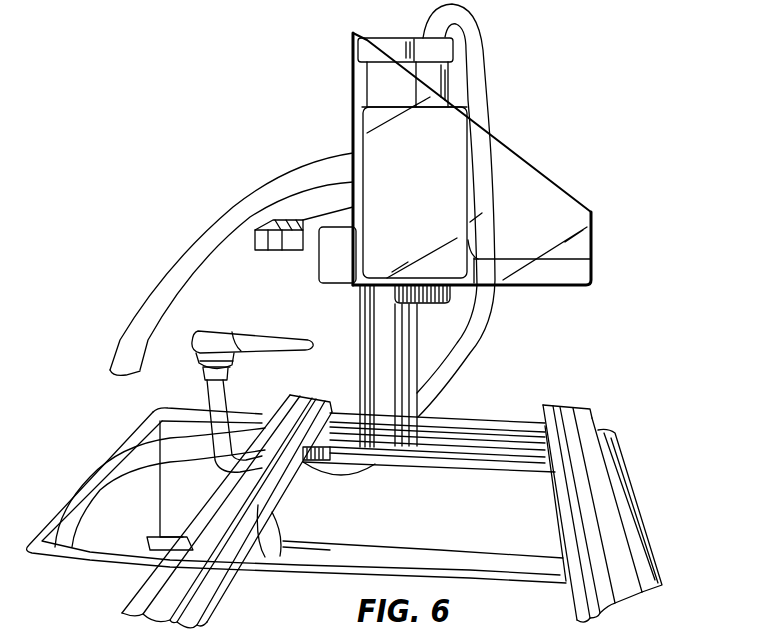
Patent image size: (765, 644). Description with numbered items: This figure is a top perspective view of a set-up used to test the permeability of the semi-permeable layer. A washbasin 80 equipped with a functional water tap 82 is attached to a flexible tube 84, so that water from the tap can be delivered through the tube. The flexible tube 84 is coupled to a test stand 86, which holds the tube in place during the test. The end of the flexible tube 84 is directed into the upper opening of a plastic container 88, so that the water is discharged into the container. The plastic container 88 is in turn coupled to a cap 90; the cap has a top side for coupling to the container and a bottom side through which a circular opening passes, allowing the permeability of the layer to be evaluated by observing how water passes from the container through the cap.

The washbasin 80 is at (120, 433).
The water tap 82 is at (230, 333).
The flexible tube 84 is at (468, 340).
The test stand 86 is at (412, 362).
The plastic container 88 is at (436, 163).
The cap 90 is at (444, 308).